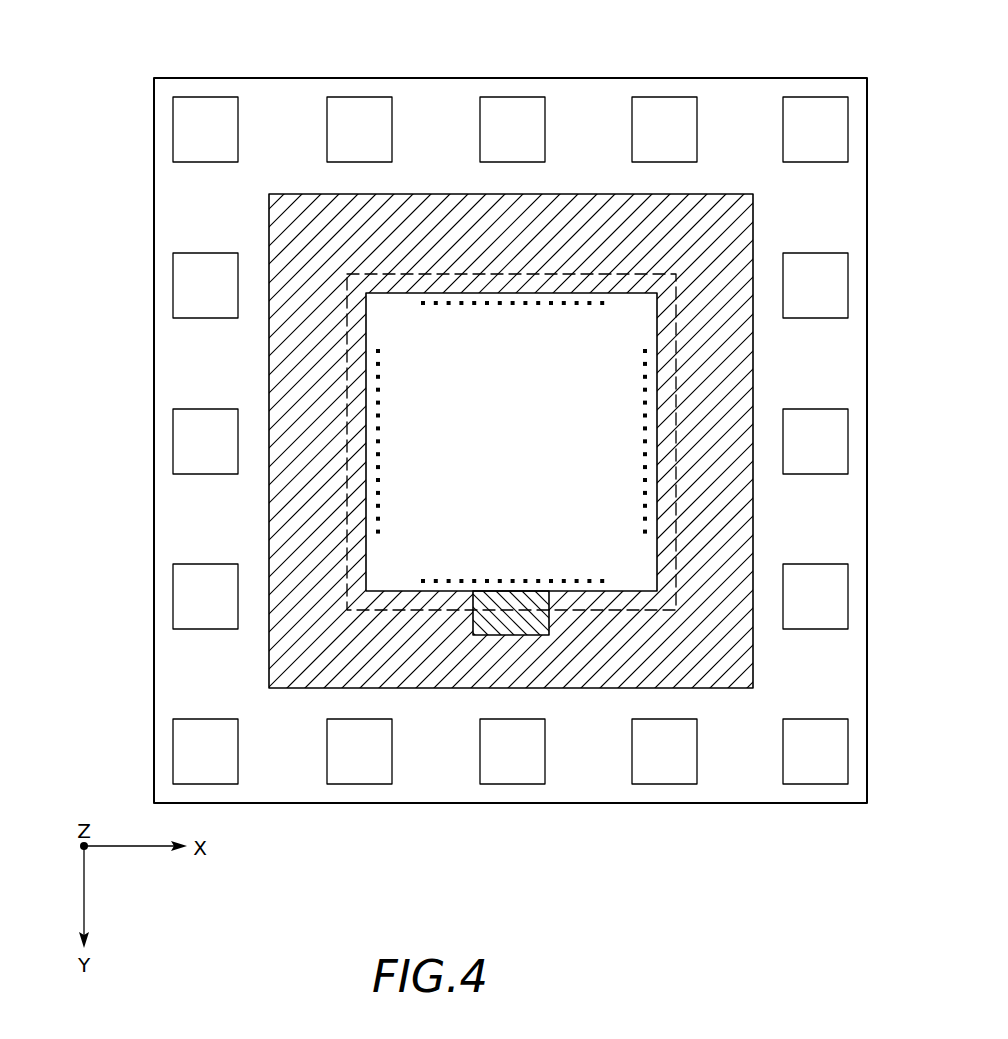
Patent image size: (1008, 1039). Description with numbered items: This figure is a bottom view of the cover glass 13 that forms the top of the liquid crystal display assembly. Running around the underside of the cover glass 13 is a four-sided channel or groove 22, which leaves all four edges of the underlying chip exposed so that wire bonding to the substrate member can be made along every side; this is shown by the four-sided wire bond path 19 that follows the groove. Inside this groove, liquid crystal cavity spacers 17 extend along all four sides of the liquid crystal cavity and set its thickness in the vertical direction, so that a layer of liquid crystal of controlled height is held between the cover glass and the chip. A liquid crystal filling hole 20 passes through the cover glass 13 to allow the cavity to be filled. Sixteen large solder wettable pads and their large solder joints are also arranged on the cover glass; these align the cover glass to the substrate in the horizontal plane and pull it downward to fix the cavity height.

The substrate 13 is at (576, 78).
The hatched adhesive/attach region 22 is at (702, 235).
The die outline (dashed) 19 is at (677, 351).
The bond pads / contacts 17 is at (439, 316).
The tab extension 20 is at (522, 636).